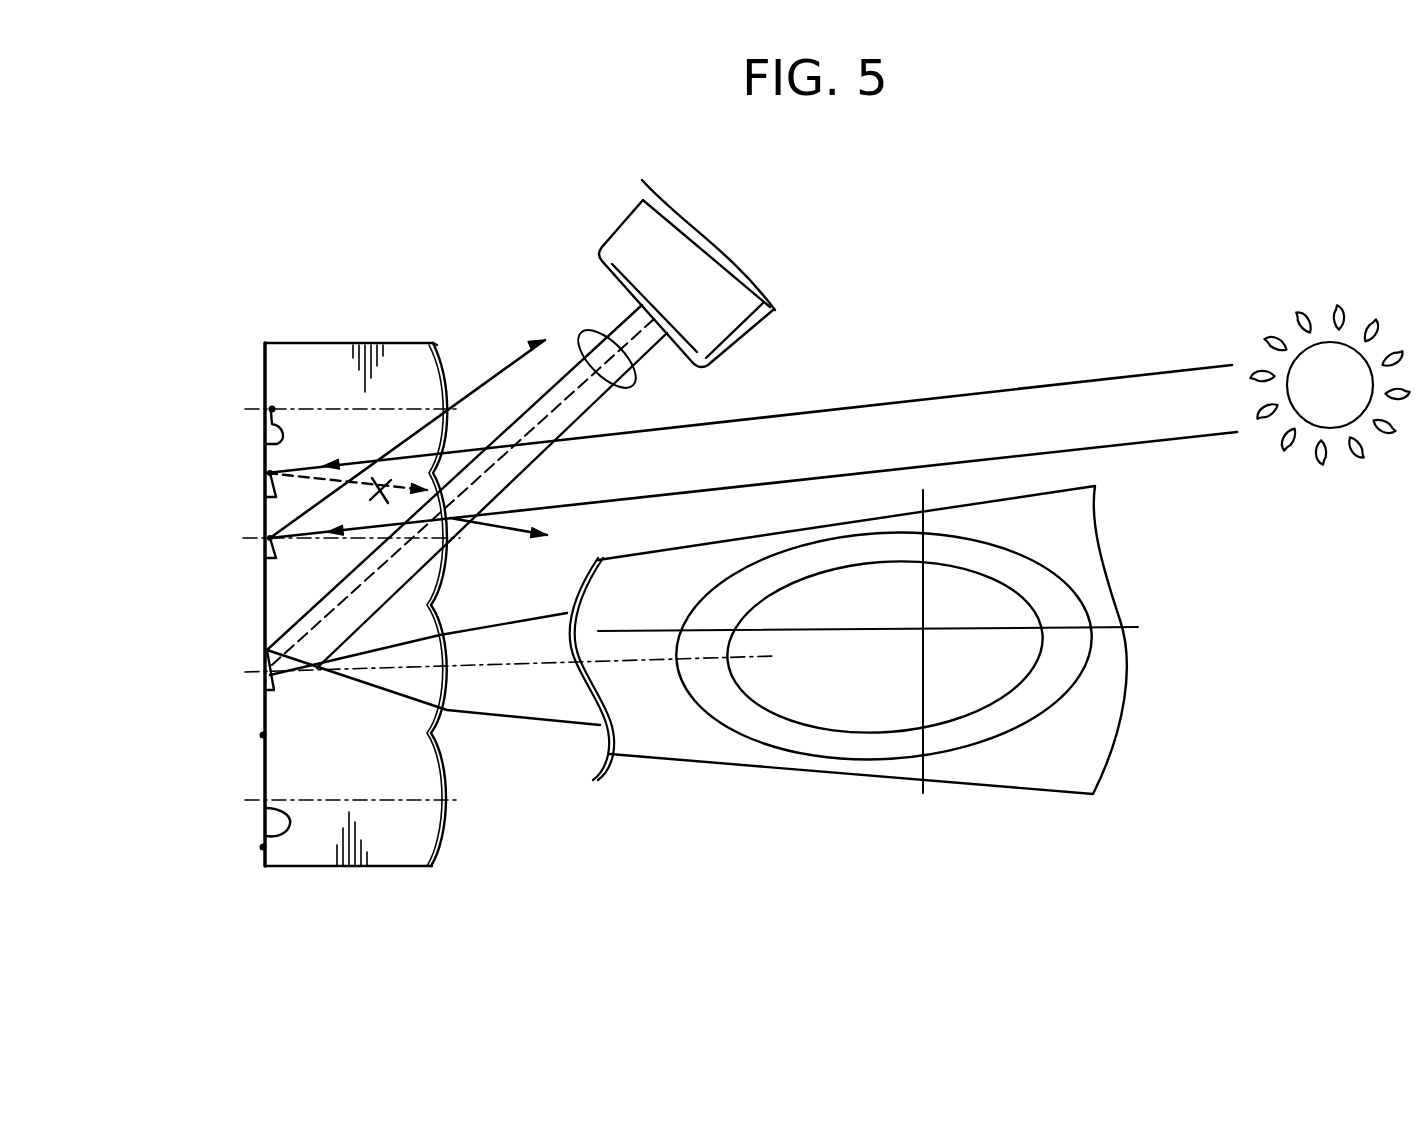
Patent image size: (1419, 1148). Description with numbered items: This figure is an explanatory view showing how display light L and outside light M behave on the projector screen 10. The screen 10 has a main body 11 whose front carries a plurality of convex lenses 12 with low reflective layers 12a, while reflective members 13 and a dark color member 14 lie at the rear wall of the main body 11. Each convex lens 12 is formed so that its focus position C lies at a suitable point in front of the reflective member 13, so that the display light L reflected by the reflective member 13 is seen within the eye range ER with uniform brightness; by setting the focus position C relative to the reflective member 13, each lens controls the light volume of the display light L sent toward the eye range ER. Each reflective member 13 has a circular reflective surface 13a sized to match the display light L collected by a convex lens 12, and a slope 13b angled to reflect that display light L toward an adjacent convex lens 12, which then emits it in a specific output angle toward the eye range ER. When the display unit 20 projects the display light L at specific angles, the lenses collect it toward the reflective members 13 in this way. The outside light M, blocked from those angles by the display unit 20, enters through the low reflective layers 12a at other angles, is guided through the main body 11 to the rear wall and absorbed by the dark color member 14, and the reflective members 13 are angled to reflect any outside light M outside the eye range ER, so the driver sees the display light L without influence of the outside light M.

The screen 10 is at (376, 296).
The main body 11 is at (298, 353).
The convex lens 12 is at (465, 354).
The low reflective layer 12a is at (443, 343).
The reflective member 13 is at (277, 473).
The circular reflective surface 13a is at (265, 448).
The slope 13b is at (265, 432).
The dark color member 14 is at (265, 360).
The display unit 20 is at (617, 223).
The display light L is at (587, 337).
The outside light M is at (986, 388).
The focus position C is at (313, 687).
The eye range ER is at (1072, 711).